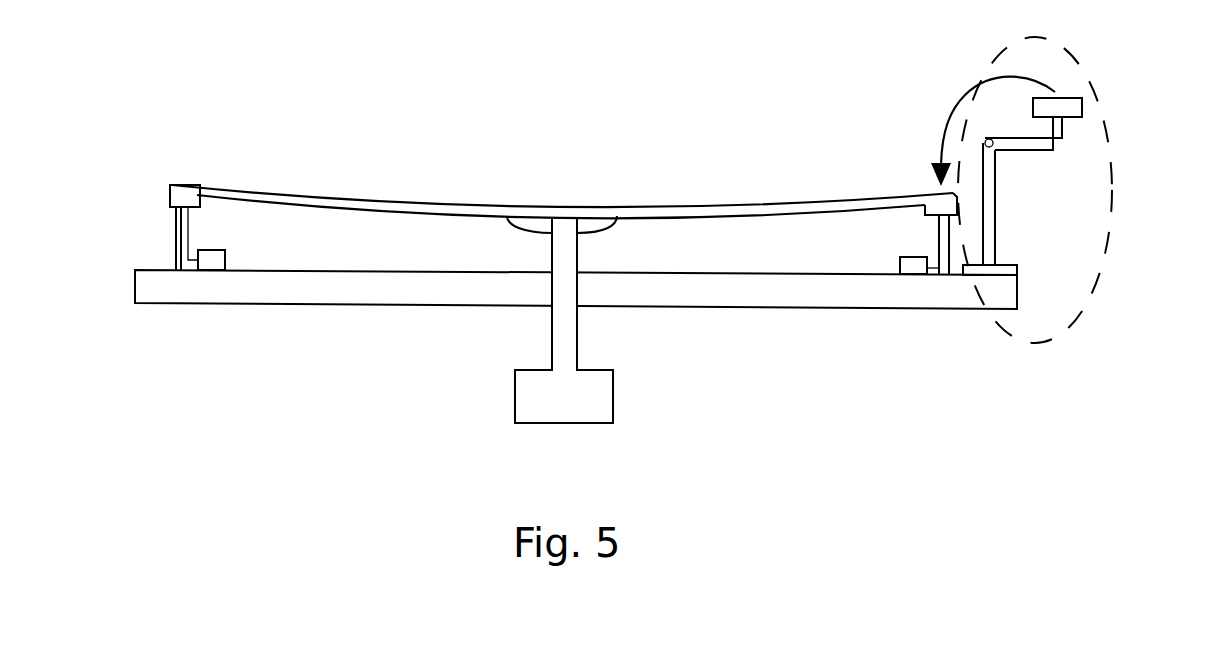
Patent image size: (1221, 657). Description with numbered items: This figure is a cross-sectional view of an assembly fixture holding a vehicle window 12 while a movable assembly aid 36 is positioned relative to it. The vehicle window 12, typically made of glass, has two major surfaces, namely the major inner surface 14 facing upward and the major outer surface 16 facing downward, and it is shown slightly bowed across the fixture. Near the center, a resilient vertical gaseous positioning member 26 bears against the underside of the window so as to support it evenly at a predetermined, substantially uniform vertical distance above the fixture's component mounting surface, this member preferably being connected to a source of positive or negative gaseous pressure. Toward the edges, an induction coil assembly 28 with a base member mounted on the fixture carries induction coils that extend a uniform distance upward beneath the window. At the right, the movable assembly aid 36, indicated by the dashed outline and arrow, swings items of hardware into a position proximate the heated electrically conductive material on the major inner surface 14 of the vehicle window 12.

The vehicle window 12 is at (168, 190).
The major inner surface 14 is at (665, 208).
The major outer surface 16 is at (683, 218).
The resilient vertical gaseous positioning member 26 is at (531, 227).
The induction coil assembly 28 is at (146, 208).
The movable assembly aid 36 is at (1106, 107).